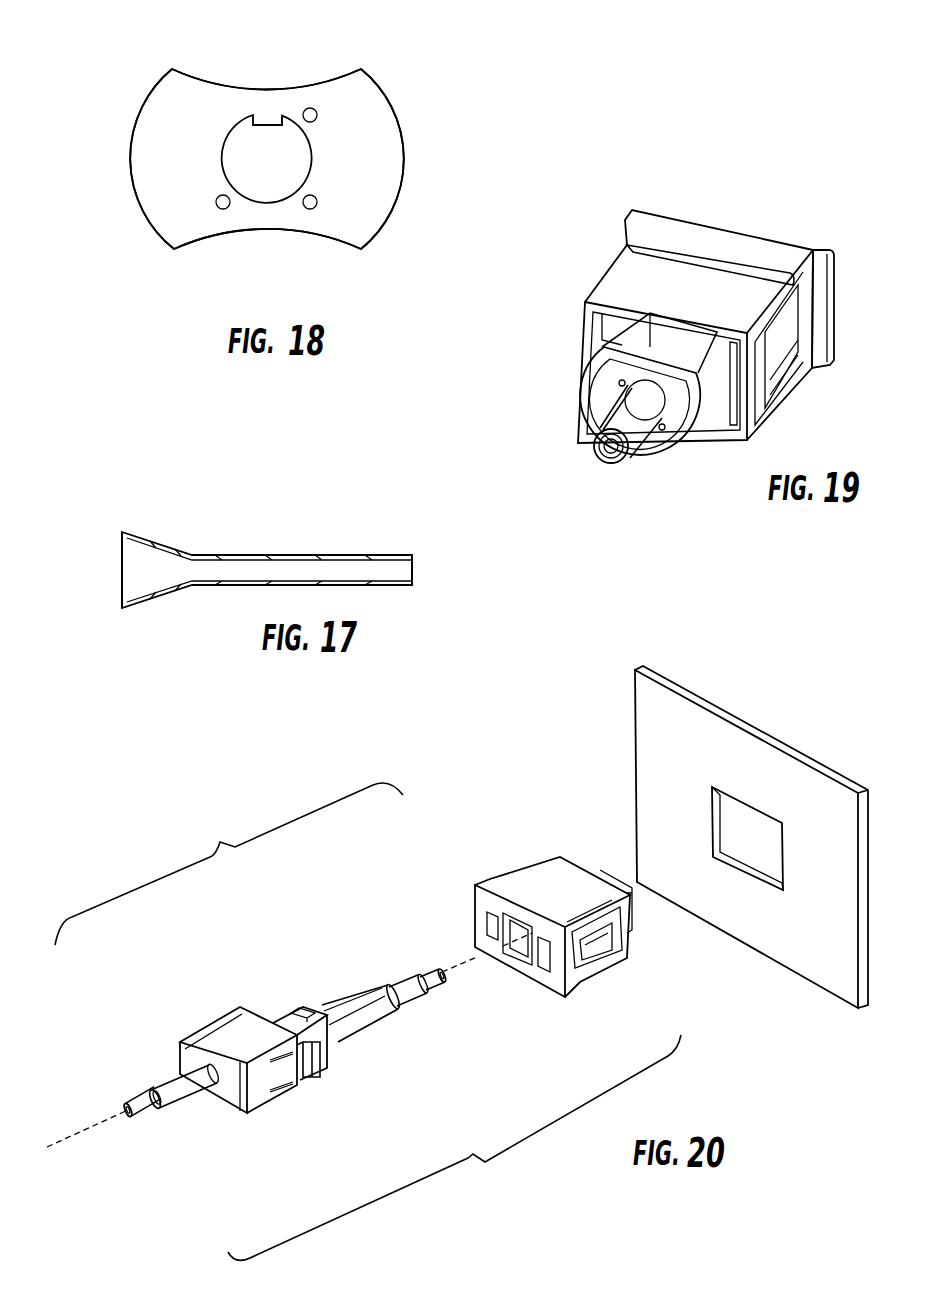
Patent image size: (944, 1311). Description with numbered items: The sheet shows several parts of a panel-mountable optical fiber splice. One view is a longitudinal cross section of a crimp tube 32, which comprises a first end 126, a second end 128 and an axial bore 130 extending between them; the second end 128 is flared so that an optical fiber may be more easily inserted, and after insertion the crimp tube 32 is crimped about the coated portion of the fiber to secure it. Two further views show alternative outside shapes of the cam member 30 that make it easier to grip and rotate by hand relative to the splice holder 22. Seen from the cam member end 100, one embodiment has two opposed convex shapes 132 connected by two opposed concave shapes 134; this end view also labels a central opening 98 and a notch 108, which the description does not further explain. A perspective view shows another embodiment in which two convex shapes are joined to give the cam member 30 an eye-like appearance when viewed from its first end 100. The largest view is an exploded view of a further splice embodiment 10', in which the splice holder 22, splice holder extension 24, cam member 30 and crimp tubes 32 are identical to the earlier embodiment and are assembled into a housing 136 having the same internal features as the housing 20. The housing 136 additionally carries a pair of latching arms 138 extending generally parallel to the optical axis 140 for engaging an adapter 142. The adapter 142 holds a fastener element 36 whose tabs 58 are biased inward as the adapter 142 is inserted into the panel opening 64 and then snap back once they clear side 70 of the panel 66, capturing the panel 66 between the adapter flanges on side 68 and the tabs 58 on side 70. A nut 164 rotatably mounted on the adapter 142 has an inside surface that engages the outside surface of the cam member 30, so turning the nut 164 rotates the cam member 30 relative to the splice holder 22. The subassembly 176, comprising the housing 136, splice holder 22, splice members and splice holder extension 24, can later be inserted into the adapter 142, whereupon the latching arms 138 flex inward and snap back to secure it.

In FIG. 18, the cam member 30 is at (280, 162).
In FIG. 19, the cam member 30 is at (655, 416).
In FIG. 20, the cam member 30 is at (280, 1013).
In FIG. 18, the cam member end 100 is at (377, 173).
In FIG. 18, the ferrule opening 98 is at (255, 170).
In FIG. 18, the keying notch 108 is at (287, 132).
In FIG. 18, the convex shape 132 is at (135, 143).
In FIG. 18, the concave shape 134 is at (222, 85).
In FIG. 17, the crimp tube 32 is at (277, 583).
In FIG. 20, the crimp tube 32 is at (147, 1112).
In FIG. 17, the axial bore 130 is at (283, 582).
In FIG. 17, the second end 128 is at (122, 555).
In FIG. 17, the first end 126 is at (412, 568).
In FIG. 19, the housing 20 is at (671, 326).
In FIG. 19, the fastener element 36 is at (647, 262).
In FIG. 20, the fastener element 36 is at (593, 960).
In FIG. 19, the fastener element tabs 58 is at (783, 380).
In FIG. 19, the splice holder 22 is at (652, 443).
In FIG. 20, the splice holder 22 is at (333, 997).
In FIG. 20, the panel-mountable optical fiber splice 10' is at (478, 963).
In FIG. 20, the optical axis 140 is at (93, 1125).
In FIG. 20, the subassembly 176 is at (251, 989).
In FIG. 20, the splice holder extension 24 is at (167, 1075).
In FIG. 20, the housing 136 is at (260, 1115).
In FIG. 20, the latching arms 138 is at (302, 1085).
In FIG. 20, the adapter 142 is at (557, 915).
In FIG. 20, the nut 164 is at (630, 890).
In FIG. 20, the panel 66 is at (772, 893).
In FIG. 20, the side 68 is at (773, 940).
In FIG. 20, the side 70 is at (868, 867).
In FIG. 20, the panel opening 64 is at (739, 847).